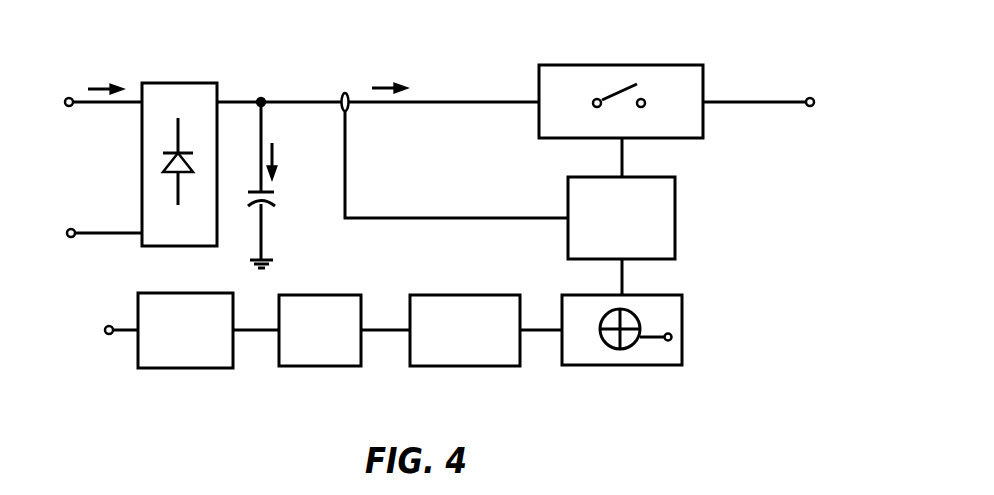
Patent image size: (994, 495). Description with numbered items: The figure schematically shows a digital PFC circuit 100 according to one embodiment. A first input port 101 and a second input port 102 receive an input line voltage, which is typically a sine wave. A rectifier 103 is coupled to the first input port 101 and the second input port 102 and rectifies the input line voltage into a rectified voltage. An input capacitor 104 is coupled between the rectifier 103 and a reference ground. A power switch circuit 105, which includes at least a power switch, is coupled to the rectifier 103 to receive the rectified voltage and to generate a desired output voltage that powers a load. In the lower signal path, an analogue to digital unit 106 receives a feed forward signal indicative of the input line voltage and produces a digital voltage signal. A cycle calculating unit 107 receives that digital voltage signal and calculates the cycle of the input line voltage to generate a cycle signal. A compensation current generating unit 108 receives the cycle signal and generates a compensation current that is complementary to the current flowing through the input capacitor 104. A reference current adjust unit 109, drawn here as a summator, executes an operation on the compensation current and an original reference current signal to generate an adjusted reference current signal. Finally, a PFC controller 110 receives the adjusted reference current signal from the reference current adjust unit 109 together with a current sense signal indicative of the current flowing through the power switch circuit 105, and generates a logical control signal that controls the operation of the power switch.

The digital PFC circuit 100 is at (125, 42).
The first input port 101 is at (70, 110).
The second input port 102 is at (87, 220).
The rectifier 103 is at (156, 247).
The input capacitor 104 is at (272, 206).
The power switch circuit 105 is at (532, 127).
The analogue to digital unit 106 is at (203, 370).
The cycle calculating unit 107 is at (320, 330).
The compensation current generating unit 108 is at (465, 330).
The reference current adjust unit 109 is at (645, 368).
The PFC controller 110 is at (682, 220).